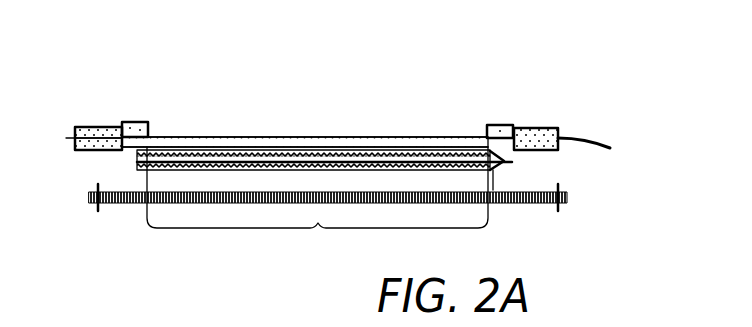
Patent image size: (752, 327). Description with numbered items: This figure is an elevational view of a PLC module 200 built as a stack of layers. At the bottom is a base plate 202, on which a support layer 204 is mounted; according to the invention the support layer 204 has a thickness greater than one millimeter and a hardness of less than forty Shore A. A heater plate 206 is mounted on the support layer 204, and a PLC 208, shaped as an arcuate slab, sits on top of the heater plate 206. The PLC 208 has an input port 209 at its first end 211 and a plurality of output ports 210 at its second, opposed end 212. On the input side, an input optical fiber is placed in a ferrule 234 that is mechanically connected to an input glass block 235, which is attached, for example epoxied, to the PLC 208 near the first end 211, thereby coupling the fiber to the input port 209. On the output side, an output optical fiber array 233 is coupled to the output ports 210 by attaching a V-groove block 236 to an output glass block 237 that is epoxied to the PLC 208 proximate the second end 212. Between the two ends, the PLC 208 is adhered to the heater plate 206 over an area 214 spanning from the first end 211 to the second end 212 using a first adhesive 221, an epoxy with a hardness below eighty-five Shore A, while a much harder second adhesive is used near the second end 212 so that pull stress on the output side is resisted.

The PLC module 200 is at (645, 53).
The base plate 202 is at (546, 200).
The support layer 204 is at (383, 175).
The heater plate 206 is at (338, 148).
The PLC 208 is at (288, 109).
The input port 209 is at (112, 128).
The output ports 210 is at (525, 128).
The first end 211 is at (163, 138).
The second end 212 is at (458, 138).
The area 214 is at (317, 206).
The first adhesive 221 is at (218, 148).
The output optical fiber array 233 is at (603, 143).
The ferrule 234 is at (85, 128).
The input glass block 235 is at (146, 122).
The V-groove block 236 is at (555, 127).
The output glass block 237 is at (493, 125).